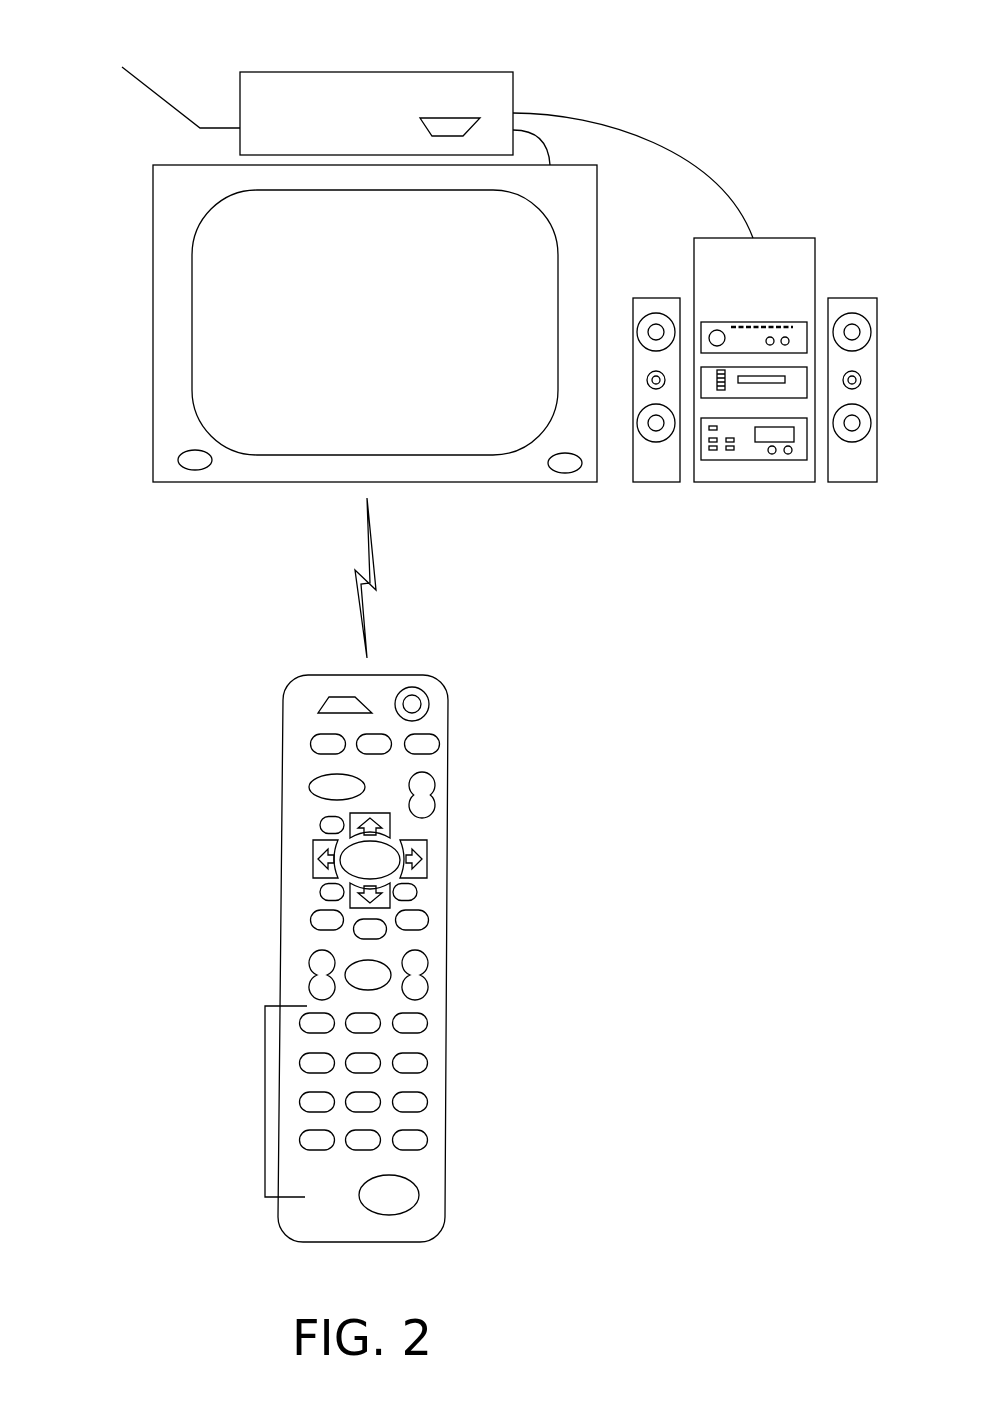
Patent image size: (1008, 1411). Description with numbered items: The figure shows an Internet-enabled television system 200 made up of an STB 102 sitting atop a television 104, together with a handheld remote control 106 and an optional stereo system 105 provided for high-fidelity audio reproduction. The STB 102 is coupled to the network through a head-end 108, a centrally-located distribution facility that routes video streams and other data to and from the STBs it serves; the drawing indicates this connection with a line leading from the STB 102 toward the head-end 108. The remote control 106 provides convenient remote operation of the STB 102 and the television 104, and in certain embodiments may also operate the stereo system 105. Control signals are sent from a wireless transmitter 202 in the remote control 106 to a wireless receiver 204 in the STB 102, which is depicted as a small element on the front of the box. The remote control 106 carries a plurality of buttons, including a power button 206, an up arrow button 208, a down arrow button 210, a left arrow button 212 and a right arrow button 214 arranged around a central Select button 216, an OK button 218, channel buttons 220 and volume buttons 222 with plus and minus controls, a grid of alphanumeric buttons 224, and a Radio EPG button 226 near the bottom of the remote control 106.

The STB 102 is at (496, 129).
The television 104 is at (375, 323).
The stereo system 105 is at (755, 360).
The remote control 106 is at (448, 962).
The head-end 108 is at (159, 84).
The Internet-enabled television system 200 is at (812, 72).
The wireless transmitter 202 is at (325, 708).
The wireless receiver 204 is at (452, 118).
The power button 206 is at (430, 704).
The up arrow button 208 is at (390, 827).
The down arrow button 210 is at (349, 895).
The left arrow button 212 is at (313, 858).
The right arrow button 214 is at (427, 858).
The Select button 216 is at (387, 843).
The OK button 218 is at (370, 959).
The channel buttons 220 is at (307, 988).
The volume buttons 222 is at (428, 985).
The alphanumeric buttons 224 is at (263, 1099).
The Radio EPG button 226 is at (420, 1195).